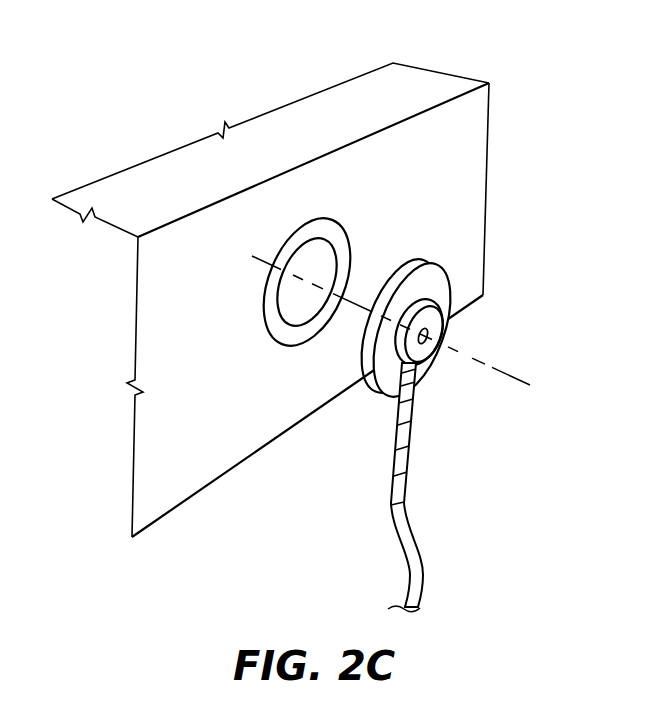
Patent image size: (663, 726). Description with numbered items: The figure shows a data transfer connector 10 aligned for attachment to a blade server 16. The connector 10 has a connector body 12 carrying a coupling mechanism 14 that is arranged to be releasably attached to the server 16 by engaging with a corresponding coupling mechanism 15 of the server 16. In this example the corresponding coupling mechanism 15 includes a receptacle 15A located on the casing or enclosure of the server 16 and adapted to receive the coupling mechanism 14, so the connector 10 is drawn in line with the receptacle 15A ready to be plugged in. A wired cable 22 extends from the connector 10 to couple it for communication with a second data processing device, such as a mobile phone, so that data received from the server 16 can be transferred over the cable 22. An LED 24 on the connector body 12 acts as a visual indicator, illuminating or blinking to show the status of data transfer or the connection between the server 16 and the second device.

The data transfer connector 10 is at (442, 317).
The connector body 12 is at (442, 292).
The coupling mechanism 14 is at (446, 259).
The corresponding coupling mechanism 15 is at (259, 308).
The receptacle 15A is at (298, 260).
The blade server 16 is at (446, 84).
The wired cable 22 is at (395, 490).
The LED 24 is at (471, 329).